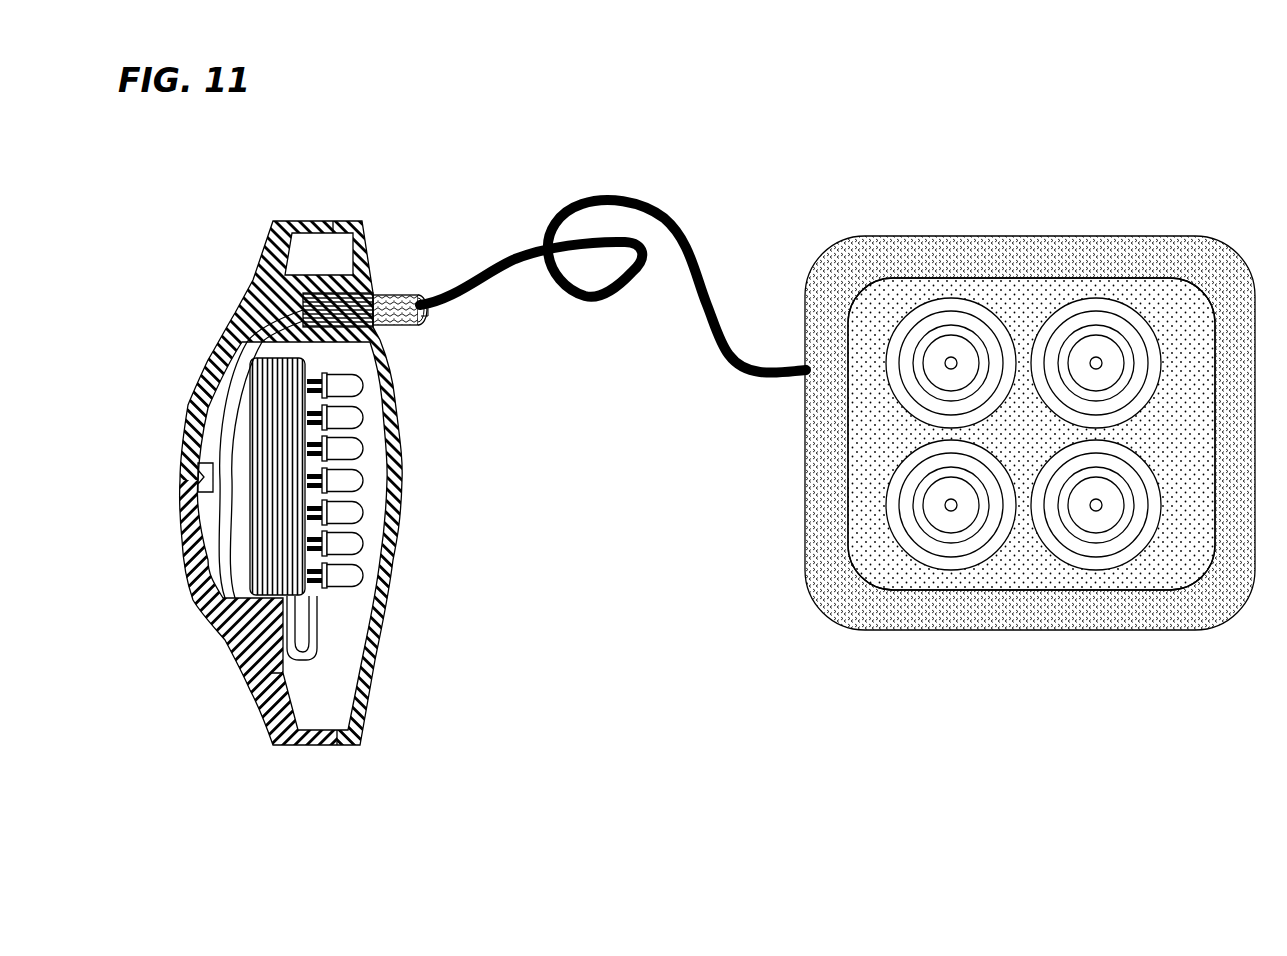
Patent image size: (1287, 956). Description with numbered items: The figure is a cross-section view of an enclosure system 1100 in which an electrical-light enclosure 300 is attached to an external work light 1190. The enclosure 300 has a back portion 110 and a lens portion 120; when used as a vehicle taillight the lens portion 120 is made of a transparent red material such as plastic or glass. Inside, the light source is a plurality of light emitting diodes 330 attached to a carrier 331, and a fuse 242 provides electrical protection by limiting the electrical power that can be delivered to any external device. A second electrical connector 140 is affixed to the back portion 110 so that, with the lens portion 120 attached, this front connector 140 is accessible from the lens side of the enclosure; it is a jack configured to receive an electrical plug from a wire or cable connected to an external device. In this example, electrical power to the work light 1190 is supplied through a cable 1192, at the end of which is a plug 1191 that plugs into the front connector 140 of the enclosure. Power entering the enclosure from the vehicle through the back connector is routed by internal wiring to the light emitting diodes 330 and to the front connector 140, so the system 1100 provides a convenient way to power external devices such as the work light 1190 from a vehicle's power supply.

The enclosure system 1100 is at (934, 82).
The electrical-light enclosure 300 is at (358, 213).
The back portion 110 is at (245, 313).
The lens portion 120 is at (358, 270).
The second electrical connector 140 is at (375, 292).
The fuse 242 is at (200, 480).
The carrier 331 is at (262, 356).
The light emitting diodes 330 is at (363, 418).
The cable connector 1191 is at (428, 324).
The cable 1192 is at (656, 203).
The external work light 1190 is at (1173, 235).